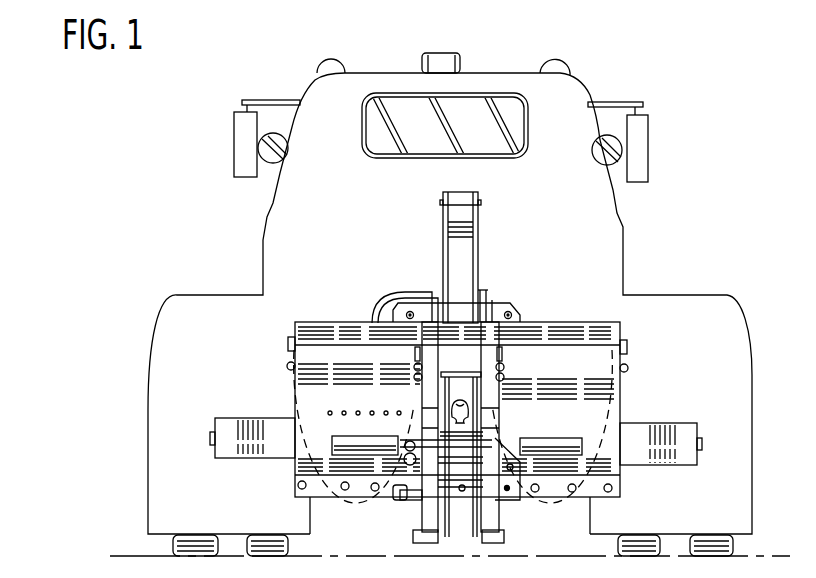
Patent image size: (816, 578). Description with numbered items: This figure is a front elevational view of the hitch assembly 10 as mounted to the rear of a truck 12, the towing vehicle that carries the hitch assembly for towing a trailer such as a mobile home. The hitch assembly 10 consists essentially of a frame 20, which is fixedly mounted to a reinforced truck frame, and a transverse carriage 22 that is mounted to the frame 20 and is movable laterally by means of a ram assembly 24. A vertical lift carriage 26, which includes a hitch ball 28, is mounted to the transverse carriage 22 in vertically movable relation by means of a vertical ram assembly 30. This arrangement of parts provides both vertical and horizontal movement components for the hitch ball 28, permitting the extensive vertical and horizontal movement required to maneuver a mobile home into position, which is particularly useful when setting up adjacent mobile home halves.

The hitch assembly 10 is at (339, 305).
The truck 12 is at (578, 80).
The frame 20 is at (546, 324).
The transverse carriage 22 is at (503, 303).
The ram assembly 24 is at (648, 424).
The vertical lift carriage 26 is at (462, 375).
The hitch ball 28 is at (468, 403).
The vertical ram assembly 30 is at (480, 244).